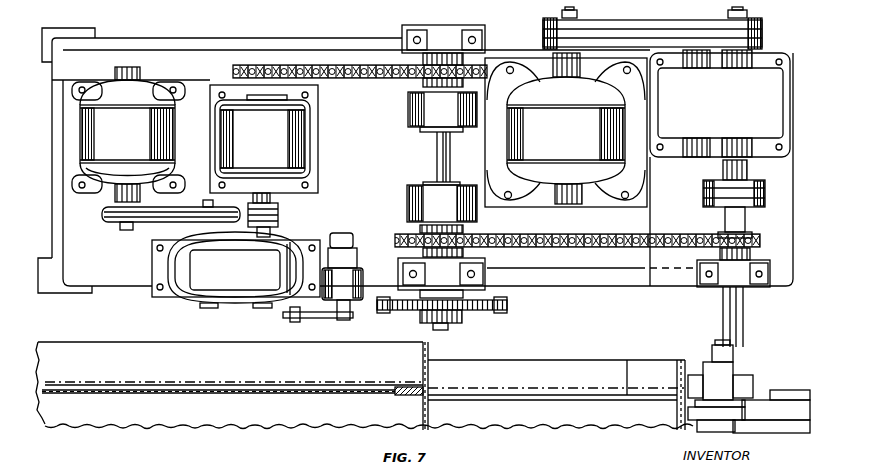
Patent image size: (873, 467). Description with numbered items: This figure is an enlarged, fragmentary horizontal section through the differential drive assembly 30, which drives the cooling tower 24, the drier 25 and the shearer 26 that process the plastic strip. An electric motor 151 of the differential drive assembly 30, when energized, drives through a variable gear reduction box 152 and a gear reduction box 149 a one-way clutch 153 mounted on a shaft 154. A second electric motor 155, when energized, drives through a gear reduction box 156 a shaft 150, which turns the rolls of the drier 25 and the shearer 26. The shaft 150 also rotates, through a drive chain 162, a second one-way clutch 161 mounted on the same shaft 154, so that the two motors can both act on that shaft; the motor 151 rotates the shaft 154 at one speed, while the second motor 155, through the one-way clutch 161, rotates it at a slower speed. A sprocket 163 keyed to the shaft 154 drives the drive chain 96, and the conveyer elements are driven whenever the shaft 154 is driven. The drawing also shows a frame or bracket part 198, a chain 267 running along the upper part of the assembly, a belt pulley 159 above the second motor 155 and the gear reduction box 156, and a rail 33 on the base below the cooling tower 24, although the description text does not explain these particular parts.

The cooling tower 24 is at (185, 430).
The drier 25 is at (695, 426).
The shearer 26 is at (785, 392).
The differential drive assembly 30 is at (146, 39).
The guide rail 33 is at (233, 395).
The drive chain 96 is at (507, 308).
The gear reduction box 149 is at (208, 110).
The shaft 150 is at (745, 322).
The electric motor 151 is at (103, 83).
The variable gear reduction box 152 is at (152, 262).
The one-way clutch 153 is at (408, 117).
The shaft 154 is at (437, 152).
The second electric motor 155 is at (535, 78).
The gear reduction box 156 is at (768, 72).
The belt pulley 159 is at (656, 24).
The second one-way clutch 161 is at (407, 203).
The drive chain 162 is at (600, 247).
The sprocket 163 is at (477, 308).
The bracket 198 is at (68, 5).
The chain 267 is at (343, 39).